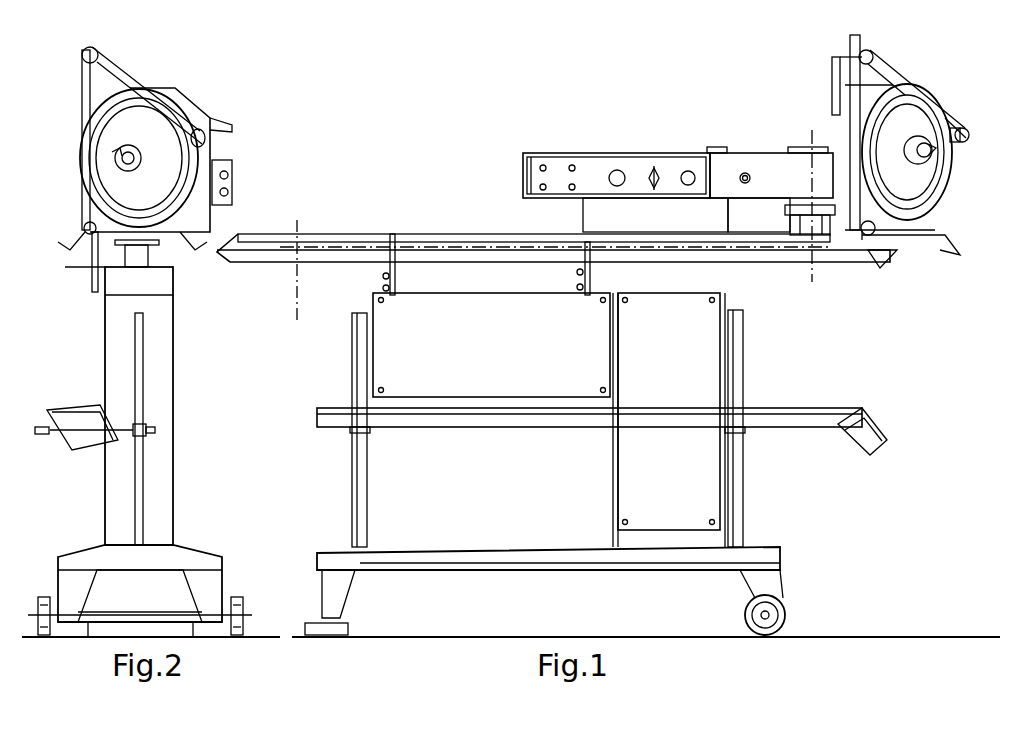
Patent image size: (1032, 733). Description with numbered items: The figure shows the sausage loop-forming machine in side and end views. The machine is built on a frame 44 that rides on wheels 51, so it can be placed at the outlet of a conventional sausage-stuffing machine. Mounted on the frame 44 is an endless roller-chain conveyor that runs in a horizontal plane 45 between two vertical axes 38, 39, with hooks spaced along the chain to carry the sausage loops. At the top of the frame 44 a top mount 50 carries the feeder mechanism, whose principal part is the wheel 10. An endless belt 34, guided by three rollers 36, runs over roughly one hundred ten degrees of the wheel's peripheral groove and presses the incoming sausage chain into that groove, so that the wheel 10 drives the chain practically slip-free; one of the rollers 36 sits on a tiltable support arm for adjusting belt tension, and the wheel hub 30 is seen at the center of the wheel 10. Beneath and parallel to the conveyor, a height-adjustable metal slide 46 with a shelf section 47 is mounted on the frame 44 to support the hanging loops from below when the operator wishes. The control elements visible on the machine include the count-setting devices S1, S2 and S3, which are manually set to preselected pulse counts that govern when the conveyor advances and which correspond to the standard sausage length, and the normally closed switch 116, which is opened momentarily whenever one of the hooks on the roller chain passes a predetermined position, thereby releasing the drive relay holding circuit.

In FIG. 1, the wheel 10 is at (924, 197).
In FIG. 1, the wheel hub / spindle 30 is at (925, 162).
In FIG. 2, the endless belt 34 is at (125, 68).
In FIG. 1, the endless belt 34 is at (890, 82).
In FIG. 1, the rollers 36 is at (870, 52).
In FIG. 1, the vertical axis 38 is at (297, 305).
In FIG. 1, the vertical axis 39 is at (815, 273).
In FIG. 2, the frame 44 is at (165, 462).
In FIG. 1, the frame 44 is at (556, 362).
In FIG. 1, the horizontal plane 45 is at (330, 240).
In FIG. 1, the metal slide 46 is at (590, 428).
In FIG. 2, the shelf section 47 is at (80, 452).
In FIG. 1, the shelf section 47 is at (878, 452).
In FIG. 1, the top mount 50 is at (798, 194).
In FIG. 2, the wheels 51 is at (43, 597).
In FIG. 1, the wheels 51 is at (780, 608).
In FIG. 1, the normally closed switch 116 is at (790, 222).
In FIG. 1, the count-setting device S1 is at (543, 164).
In FIG. 1, the count-setting device S2 is at (545, 190).
In FIG. 1, the count-setting device S3 is at (576, 185).